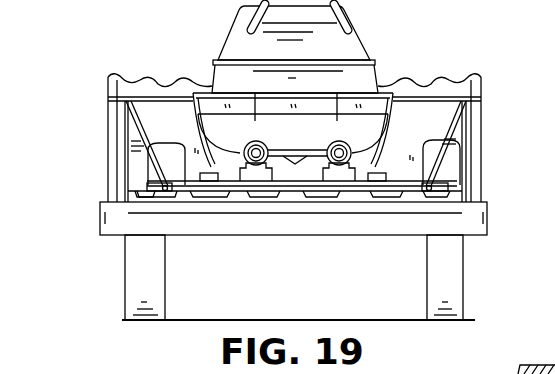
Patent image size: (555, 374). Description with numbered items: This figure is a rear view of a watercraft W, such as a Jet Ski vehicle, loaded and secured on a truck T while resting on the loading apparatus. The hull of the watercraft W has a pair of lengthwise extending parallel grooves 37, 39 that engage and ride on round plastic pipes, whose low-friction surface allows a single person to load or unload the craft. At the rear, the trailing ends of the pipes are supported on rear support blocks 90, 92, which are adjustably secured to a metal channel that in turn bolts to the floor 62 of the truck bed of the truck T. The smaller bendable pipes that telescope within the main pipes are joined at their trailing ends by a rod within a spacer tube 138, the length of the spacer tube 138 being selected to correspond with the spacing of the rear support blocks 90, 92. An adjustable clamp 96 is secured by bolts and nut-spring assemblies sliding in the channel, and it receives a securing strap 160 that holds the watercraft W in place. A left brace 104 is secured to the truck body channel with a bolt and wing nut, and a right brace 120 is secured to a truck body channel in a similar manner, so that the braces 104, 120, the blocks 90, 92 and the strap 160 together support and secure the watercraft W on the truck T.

The lengthwise extending parallel groove 37 is at (255, 93).
The lengthwise extending parallel groove 39 is at (344, 80).
The rear support block 90 is at (244, 152).
The rear support block 92 is at (351, 152).
The spacer tube 138 is at (313, 150).
The adjustable clamp 96 is at (188, 172).
The left brace 104 is at (136, 128).
The securing strap 160 is at (407, 126).
The right brace 120 is at (462, 128).
The floor 62 is at (447, 181).
The watercraft W is at (200, 43).
The truck T is at (90, 177).